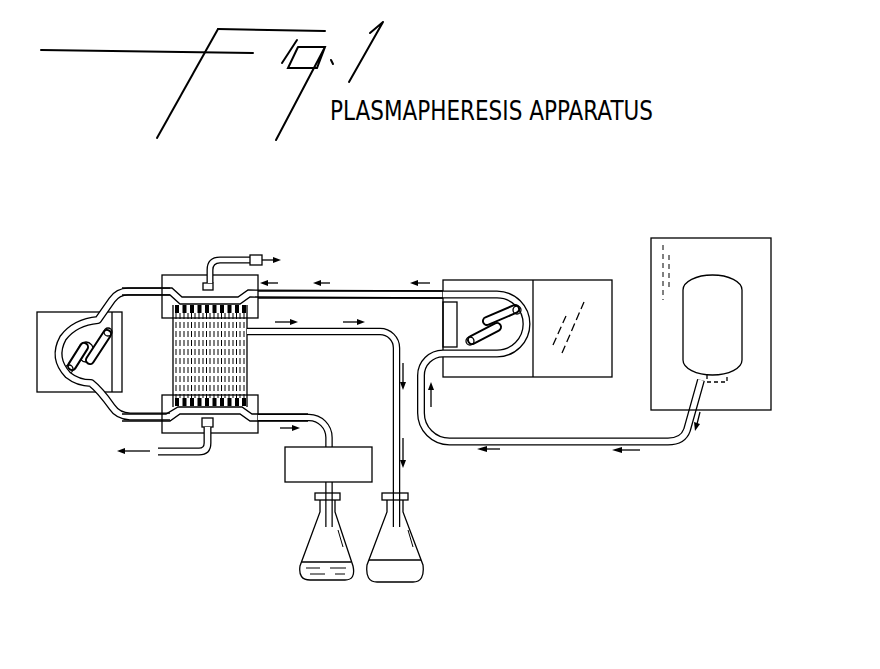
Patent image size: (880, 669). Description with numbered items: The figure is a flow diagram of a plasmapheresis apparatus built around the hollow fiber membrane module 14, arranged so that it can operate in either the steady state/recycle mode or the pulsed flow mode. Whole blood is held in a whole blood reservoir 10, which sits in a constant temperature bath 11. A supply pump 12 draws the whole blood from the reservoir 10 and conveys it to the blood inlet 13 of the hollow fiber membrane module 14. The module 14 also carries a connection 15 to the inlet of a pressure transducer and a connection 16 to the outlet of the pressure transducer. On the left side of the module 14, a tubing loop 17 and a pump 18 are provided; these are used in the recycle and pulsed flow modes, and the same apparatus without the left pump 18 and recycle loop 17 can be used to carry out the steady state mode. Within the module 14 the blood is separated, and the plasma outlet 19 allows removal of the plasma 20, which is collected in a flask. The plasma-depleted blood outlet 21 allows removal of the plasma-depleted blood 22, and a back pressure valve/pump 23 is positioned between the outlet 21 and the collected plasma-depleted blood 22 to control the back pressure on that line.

The whole blood reservoir 10 is at (742, 328).
The constant temperature bath 11 is at (658, 243).
The supply pump 12 is at (505, 280).
The blood inlet 13 is at (293, 292).
The hollow fiber membrane module 14 is at (181, 283).
The inlet of pressure transducer 15 is at (250, 256).
The outlet of pressure transducer 16 is at (207, 458).
The tubing loop 17 is at (103, 289).
The pump 18 is at (57, 393).
The plasma outlet 19 is at (248, 332).
The plasma 20 is at (412, 563).
The plasma-depleted blood outlet 21 is at (272, 413).
The plasma-depleted blood 22 is at (305, 568).
The back pressure valve/pump 23 is at (285, 463).